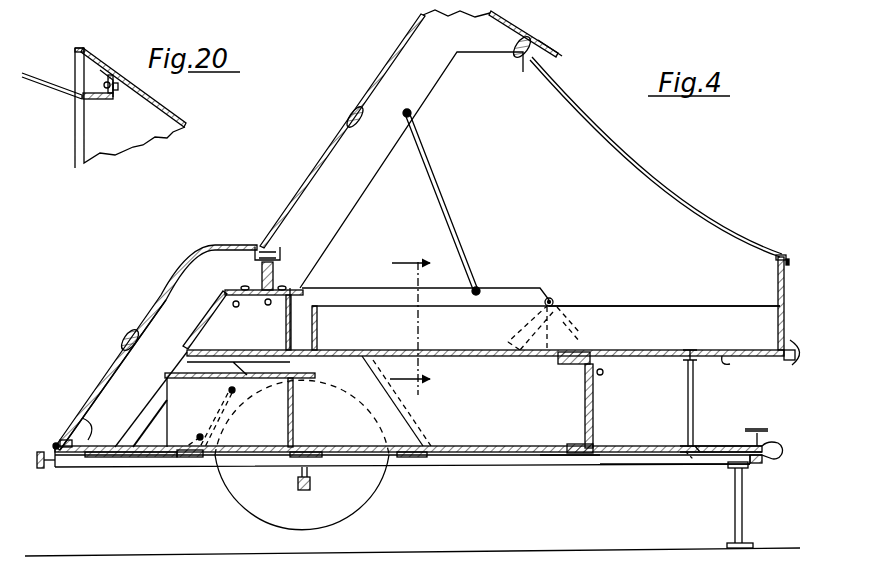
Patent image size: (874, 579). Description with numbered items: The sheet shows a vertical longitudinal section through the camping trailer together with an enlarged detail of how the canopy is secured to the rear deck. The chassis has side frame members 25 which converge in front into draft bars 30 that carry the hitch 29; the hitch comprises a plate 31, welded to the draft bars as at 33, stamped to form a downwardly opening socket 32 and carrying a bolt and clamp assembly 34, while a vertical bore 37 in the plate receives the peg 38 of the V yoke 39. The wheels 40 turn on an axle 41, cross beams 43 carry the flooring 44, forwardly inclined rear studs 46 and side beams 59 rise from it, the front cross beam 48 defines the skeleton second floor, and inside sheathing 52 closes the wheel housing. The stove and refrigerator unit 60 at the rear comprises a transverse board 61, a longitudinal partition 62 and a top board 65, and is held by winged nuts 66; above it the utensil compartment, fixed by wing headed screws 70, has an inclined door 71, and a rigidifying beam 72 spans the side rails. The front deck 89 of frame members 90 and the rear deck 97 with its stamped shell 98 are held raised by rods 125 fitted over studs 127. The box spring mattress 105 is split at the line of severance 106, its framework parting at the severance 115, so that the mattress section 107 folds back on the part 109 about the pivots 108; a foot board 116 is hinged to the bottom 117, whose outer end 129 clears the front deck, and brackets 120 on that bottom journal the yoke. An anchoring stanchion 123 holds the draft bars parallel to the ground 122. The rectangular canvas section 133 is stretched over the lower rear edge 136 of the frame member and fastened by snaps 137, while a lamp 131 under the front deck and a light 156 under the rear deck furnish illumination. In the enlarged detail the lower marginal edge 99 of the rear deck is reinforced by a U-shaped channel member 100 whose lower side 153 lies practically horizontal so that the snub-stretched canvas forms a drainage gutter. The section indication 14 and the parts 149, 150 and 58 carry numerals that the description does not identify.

In FIG. 20, the lower marginal edge 99 is at (84, 47).
In FIG. 4, the lower marginal edge 99 is at (54, 444).
In FIG. 20, the U-shaped channel member 100 is at (103, 70).
In FIG. 4, the U-shaped channel member 100 is at (72, 442).
In FIG. 20, the lower side of truss 153 is at (93, 92).
In FIG. 20, the support bar 149 is at (62, 92).
In FIG. 20, the rear deck 97 is at (160, 106).
In FIG. 4, the rear deck 97 is at (160, 290).
In FIG. 4, the die stamped shell 98 is at (156, 302).
In FIG. 4, the front deck unit 89 is at (396, 57).
In FIG. 4, the snaps 137 is at (512, 28).
In FIG. 4, the frame members 90 is at (549, 50).
In FIG. 4, the lower rear edge 136 is at (518, 54).
In FIG. 4, the lamp 131 is at (352, 114).
In FIG. 4, the studs 127 is at (413, 114).
In FIG. 4, the rectangular canvas section 133 is at (655, 171).
In FIG. 4, the rods 125 is at (438, 202).
In FIG. 4, the section line 14 is at (428, 260).
In FIG. 4, the mattress part 109 is at (432, 312).
In FIG. 4, the side beams 59 is at (493, 297).
In FIG. 4, the pivot point 108 is at (551, 299).
In FIG. 4, the line of severance 106 is at (555, 304).
In FIG. 4, the framework severance 115 is at (598, 315).
In FIG. 4, the box spring mattress 105 is at (636, 298).
In FIG. 4, the mattress section 107 is at (652, 320).
In FIG. 4, the foot board 116 is at (777, 267).
In FIG. 4, the rigidifying beam 72 is at (260, 278).
In FIG. 4, the door 71 is at (212, 312).
In FIG. 4, the wing headed wood screws 70 is at (268, 306).
In FIG. 4, the light 156 is at (127, 333).
In FIG. 4, the stove and refrigerator compartment unit 60 is at (160, 372).
In FIG. 4, the lug 150 is at (86, 420).
In FIG. 4, the rear studs 46 is at (146, 412).
In FIG. 4, the top board 65 is at (240, 410).
In FIG. 4, the winged nuts 66 is at (206, 437).
In FIG. 4, the transverse vertical board 61 is at (294, 414).
In FIG. 4, the inside sheathing 52 is at (398, 405).
In FIG. 4, the cross beam 48 is at (575, 400).
In FIG. 4, the bolt 58 is at (600, 375).
In FIG. 4, the brackets 120 is at (685, 358).
In FIG. 4, the bottom of mattress section 117 is at (724, 354).
In FIG. 4, the outer end 129 is at (791, 363).
In FIG. 4, the V yoke 39 is at (688, 405).
In FIG. 4, the plate 31 is at (708, 446).
In FIG. 4, the weld 33 is at (722, 447).
In FIG. 4, the bolt and clamp assembly 34 is at (762, 430).
In FIG. 4, the hitch 29 is at (779, 443).
In FIG. 4, the vertical bore 37 is at (695, 446).
In FIG. 4, the peg 38 is at (688, 456).
In FIG. 4, the socket 32 is at (764, 459).
In FIG. 4, the partition 62 is at (175, 432).
In FIG. 4, the wheels 40 is at (228, 508).
In FIG. 4, the axle 41 is at (302, 492).
In FIG. 4, the side frame members 25 is at (421, 466).
In FIG. 4, the flooring 44 is at (493, 455).
In FIG. 4, the cross beams 43 is at (572, 458).
In FIG. 4, the draft bars 30 is at (623, 456).
In FIG. 4, the anchoring stanchion 123 is at (734, 501).
In FIG. 4, the ground 122 is at (458, 555).